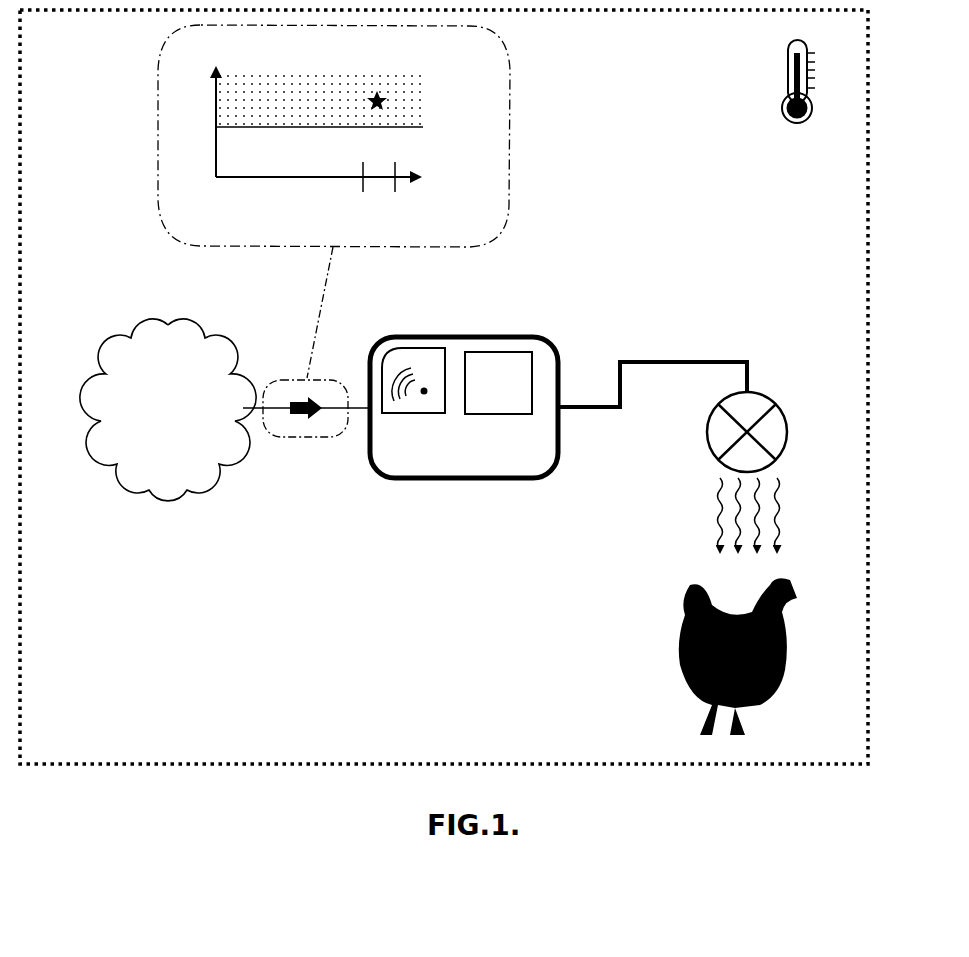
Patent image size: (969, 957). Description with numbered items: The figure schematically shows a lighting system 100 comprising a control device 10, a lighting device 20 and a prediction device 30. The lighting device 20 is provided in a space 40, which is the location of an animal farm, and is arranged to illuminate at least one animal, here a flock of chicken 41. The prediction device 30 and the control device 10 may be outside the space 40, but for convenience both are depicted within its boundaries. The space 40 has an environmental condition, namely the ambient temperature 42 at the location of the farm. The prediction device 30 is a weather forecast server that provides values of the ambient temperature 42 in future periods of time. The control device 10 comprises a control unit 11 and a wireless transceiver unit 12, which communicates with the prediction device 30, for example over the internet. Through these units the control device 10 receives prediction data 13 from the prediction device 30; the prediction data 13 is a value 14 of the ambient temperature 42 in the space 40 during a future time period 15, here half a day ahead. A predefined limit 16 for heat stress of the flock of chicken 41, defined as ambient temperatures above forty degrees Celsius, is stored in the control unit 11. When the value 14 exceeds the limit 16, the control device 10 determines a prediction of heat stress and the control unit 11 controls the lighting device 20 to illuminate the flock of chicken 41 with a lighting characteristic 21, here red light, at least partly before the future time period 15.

The lighting system 100 is at (444, 660).
The control device 10 is at (562, 328).
The control unit 11 is at (503, 352).
The wireless transceiver unit 12 is at (421, 348).
The prediction data 13 is at (218, 43).
The value 14 is at (382, 95).
The future time period 15 is at (379, 186).
The predefined limit 16 is at (430, 128).
The lighting device 20 is at (766, 384).
The lighting characteristic 21 is at (780, 525).
The prediction device 30 is at (196, 498).
The space 40 is at (868, 170).
The flock of chicken 41 is at (787, 673).
The ambient temperature 42 is at (788, 70).